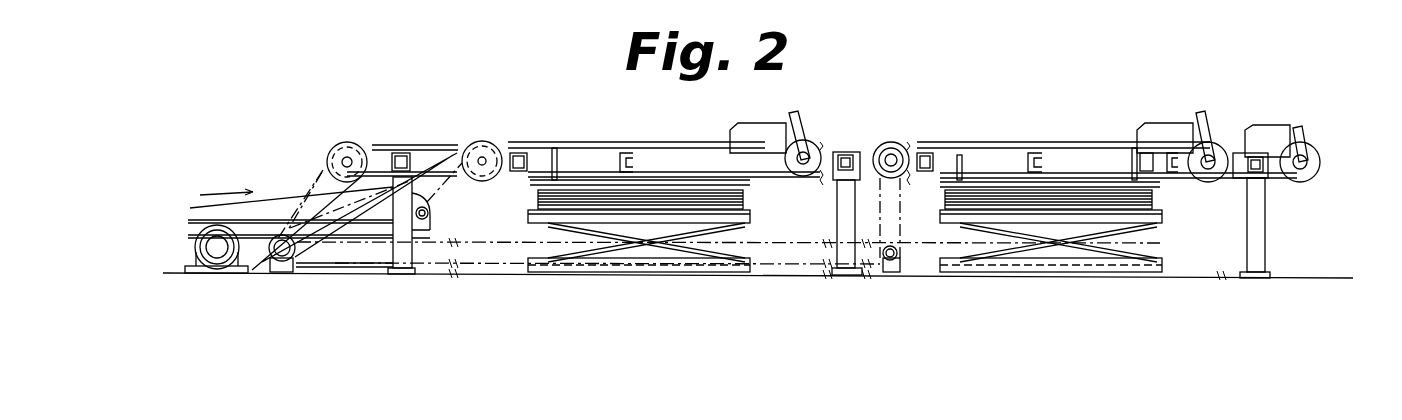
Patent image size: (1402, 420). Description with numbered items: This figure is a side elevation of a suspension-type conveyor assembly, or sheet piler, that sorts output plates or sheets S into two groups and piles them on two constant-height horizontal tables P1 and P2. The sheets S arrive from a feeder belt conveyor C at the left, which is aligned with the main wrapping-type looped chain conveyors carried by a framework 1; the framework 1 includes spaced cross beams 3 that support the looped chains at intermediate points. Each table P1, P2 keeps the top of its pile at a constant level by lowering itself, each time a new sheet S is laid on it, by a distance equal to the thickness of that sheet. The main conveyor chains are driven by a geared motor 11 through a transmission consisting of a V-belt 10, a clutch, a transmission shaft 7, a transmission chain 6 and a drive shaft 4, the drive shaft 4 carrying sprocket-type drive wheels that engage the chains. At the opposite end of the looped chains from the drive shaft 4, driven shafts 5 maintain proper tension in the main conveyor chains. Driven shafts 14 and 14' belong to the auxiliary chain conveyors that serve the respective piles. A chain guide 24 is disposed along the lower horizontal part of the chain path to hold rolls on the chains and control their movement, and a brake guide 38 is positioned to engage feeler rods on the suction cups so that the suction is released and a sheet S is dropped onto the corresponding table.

The framework 1 is at (853, 148).
The cross beams 3 is at (1257, 160).
The drive shaft 4 is at (347, 162).
The driven shafts 5 is at (1310, 162).
The transmission chain 6 is at (322, 170).
The transmission shaft 7 is at (279, 268).
The V-belt 10 is at (262, 240).
The geared motor 11 is at (213, 226).
The driven shaft 14 is at (775, 172).
The driven shaft 14' is at (1187, 181).
The chain guide 24 is at (443, 177).
The brake guide 38 is at (532, 182).
The feeder belt conveyor C is at (288, 200).
The sheets S is at (538, 193).
The constant-height horizontal table P1 is at (528, 218).
The constant-height horizontal table P2 is at (937, 217).